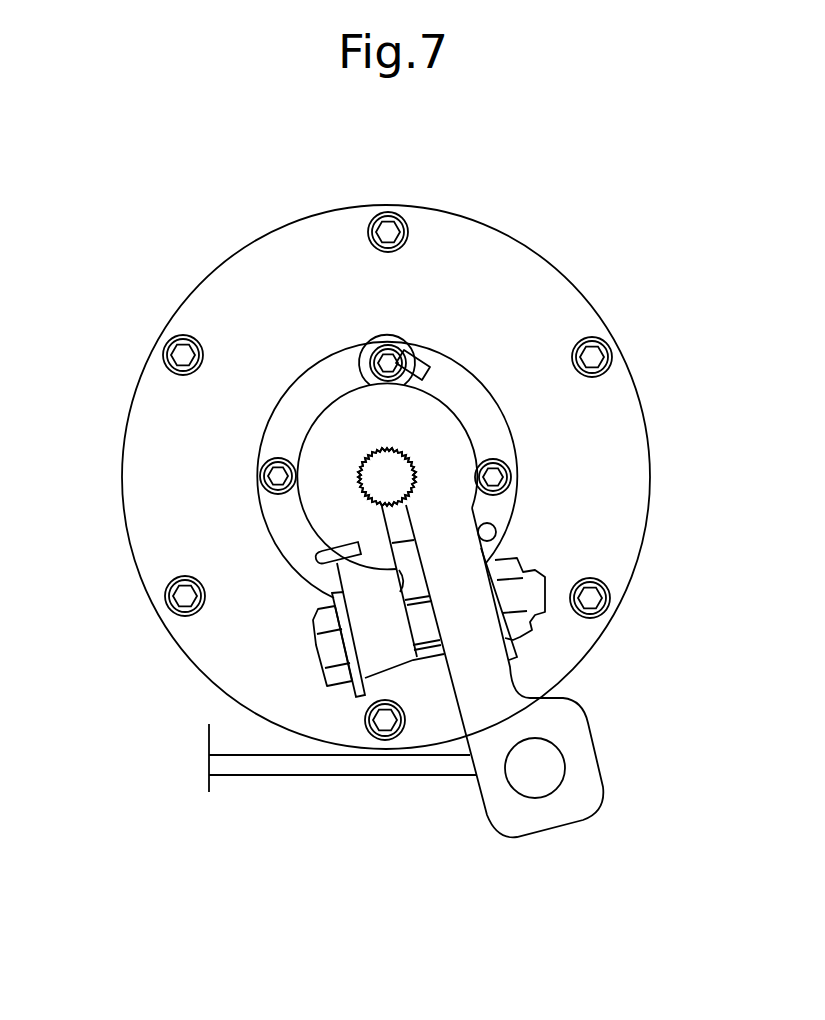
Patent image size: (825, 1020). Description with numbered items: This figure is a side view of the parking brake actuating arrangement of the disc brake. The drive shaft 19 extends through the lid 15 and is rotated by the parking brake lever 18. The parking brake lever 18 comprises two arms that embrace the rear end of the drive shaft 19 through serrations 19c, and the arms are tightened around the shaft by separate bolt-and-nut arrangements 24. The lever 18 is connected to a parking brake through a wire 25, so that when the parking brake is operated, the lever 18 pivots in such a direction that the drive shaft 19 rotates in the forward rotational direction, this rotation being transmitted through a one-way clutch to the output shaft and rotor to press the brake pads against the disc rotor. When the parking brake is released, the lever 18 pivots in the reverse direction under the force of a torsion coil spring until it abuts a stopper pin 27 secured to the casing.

The lid 15 is at (427, 235).
The parking brake lever 18 is at (587, 793).
The drive shaft 19 is at (396, 473).
The serrations 19c is at (393, 450).
The bolt-and-nut arrangements 24 is at (330, 647).
The wire 25 is at (390, 770).
The stopper pin 27 is at (487, 532).